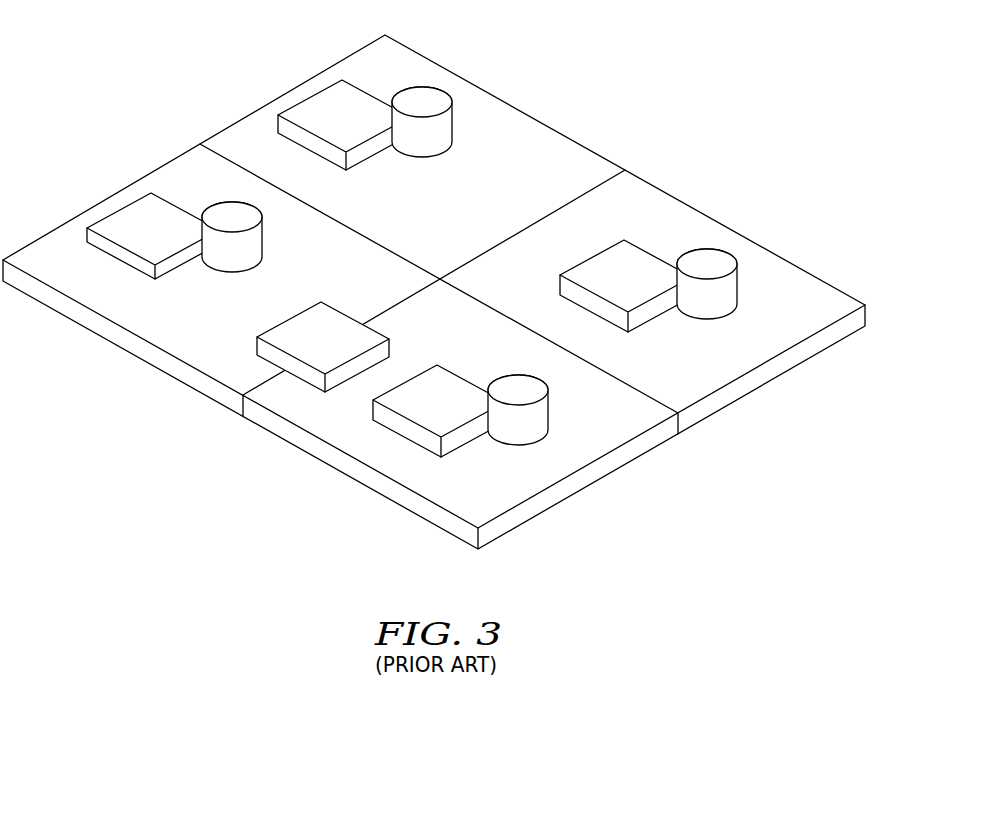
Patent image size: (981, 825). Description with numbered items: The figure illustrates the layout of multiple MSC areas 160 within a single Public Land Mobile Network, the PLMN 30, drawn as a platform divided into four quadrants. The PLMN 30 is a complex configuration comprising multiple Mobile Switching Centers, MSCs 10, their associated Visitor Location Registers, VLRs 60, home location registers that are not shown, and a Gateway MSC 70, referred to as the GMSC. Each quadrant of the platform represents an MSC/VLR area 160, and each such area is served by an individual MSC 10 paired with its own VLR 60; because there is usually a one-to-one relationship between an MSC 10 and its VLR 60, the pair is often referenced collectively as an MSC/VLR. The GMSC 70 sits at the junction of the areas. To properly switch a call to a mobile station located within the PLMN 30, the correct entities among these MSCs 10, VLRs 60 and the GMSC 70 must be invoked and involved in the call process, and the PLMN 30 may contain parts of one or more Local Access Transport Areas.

The Mobile Switching Center (MSC) 10 is at (140, 202).
The Visitor Location Register (VLR) 60 is at (233, 214).
The Gateway MSC (GMSC) 70 is at (321, 305).
The MSC/VLR area 160 is at (48, 250).
The Public Land Mobile Network (PLMN) 30 is at (434, 284).